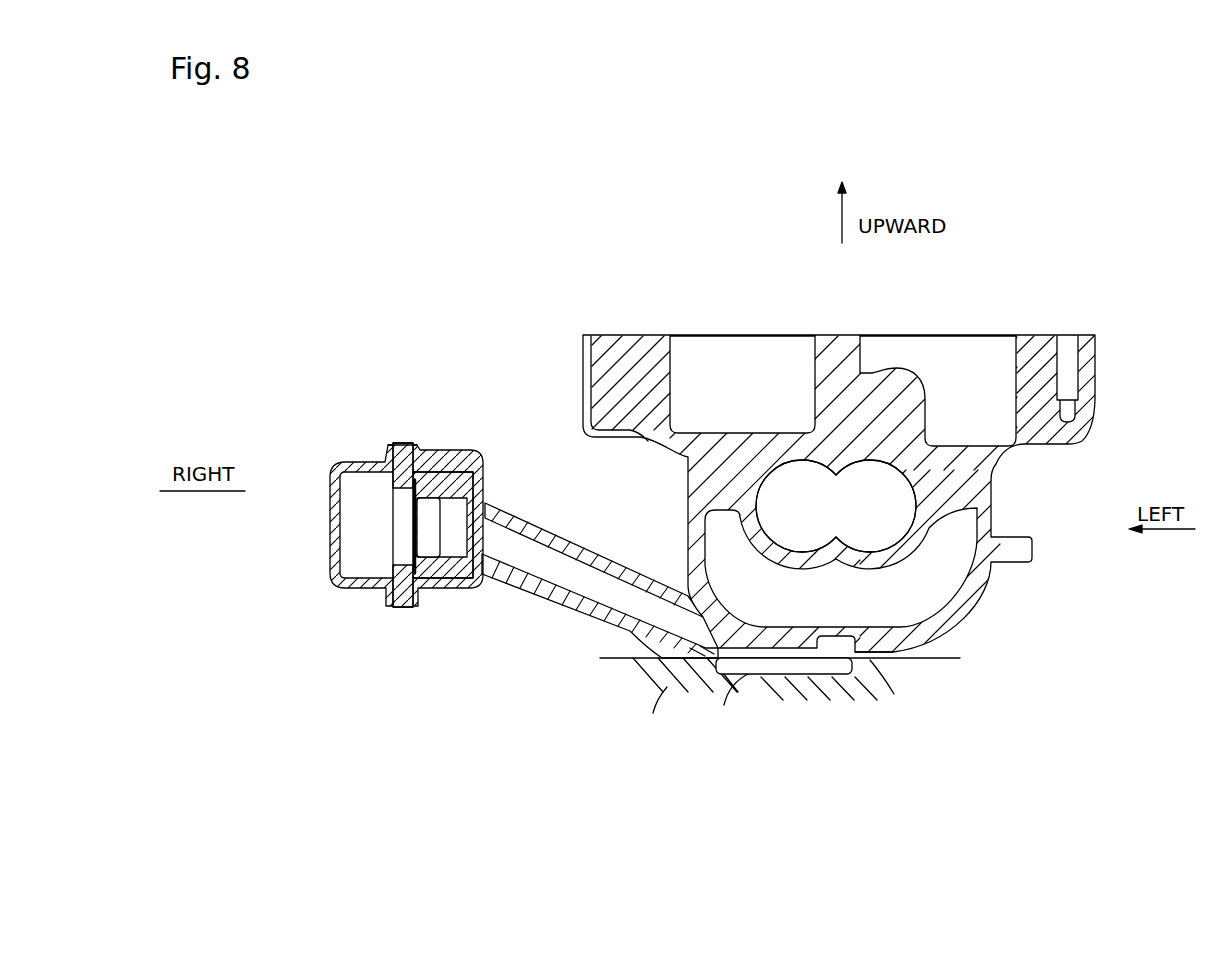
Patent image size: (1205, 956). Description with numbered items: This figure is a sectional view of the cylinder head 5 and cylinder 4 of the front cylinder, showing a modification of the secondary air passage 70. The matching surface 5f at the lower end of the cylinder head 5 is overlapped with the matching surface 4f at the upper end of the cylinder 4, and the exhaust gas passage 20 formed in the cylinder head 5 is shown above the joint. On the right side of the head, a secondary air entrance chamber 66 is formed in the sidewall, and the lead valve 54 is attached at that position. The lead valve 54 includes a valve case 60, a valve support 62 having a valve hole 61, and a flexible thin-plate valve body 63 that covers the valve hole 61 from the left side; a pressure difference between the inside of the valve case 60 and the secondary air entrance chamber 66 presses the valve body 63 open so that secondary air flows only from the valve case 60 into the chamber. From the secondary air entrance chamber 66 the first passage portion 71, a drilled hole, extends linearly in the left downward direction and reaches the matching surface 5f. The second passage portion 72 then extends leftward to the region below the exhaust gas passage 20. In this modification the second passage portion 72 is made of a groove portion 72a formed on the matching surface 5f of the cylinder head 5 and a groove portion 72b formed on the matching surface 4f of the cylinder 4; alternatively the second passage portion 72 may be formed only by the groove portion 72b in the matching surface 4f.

The cylinder 4 is at (935, 688).
The matching surface 4f is at (945, 657).
The cylinder head 5 is at (848, 355).
The matching surface 5f is at (868, 656).
The exhaust gas passage 20 is at (880, 525).
The lead valve 54 is at (411, 426).
The valve case 60 is at (345, 592).
The valve hole 61 is at (405, 527).
The valve support 62 is at (400, 607).
The valve body 63 is at (426, 518).
The secondary air entrance chamber 66 is at (443, 567).
The secondary air passage 70 is at (667, 647).
The first passage portion 71 is at (600, 590).
The second passage portion 72 is at (721, 711).
The groove portion 72a is at (715, 657).
The groove portion 72b is at (752, 667).